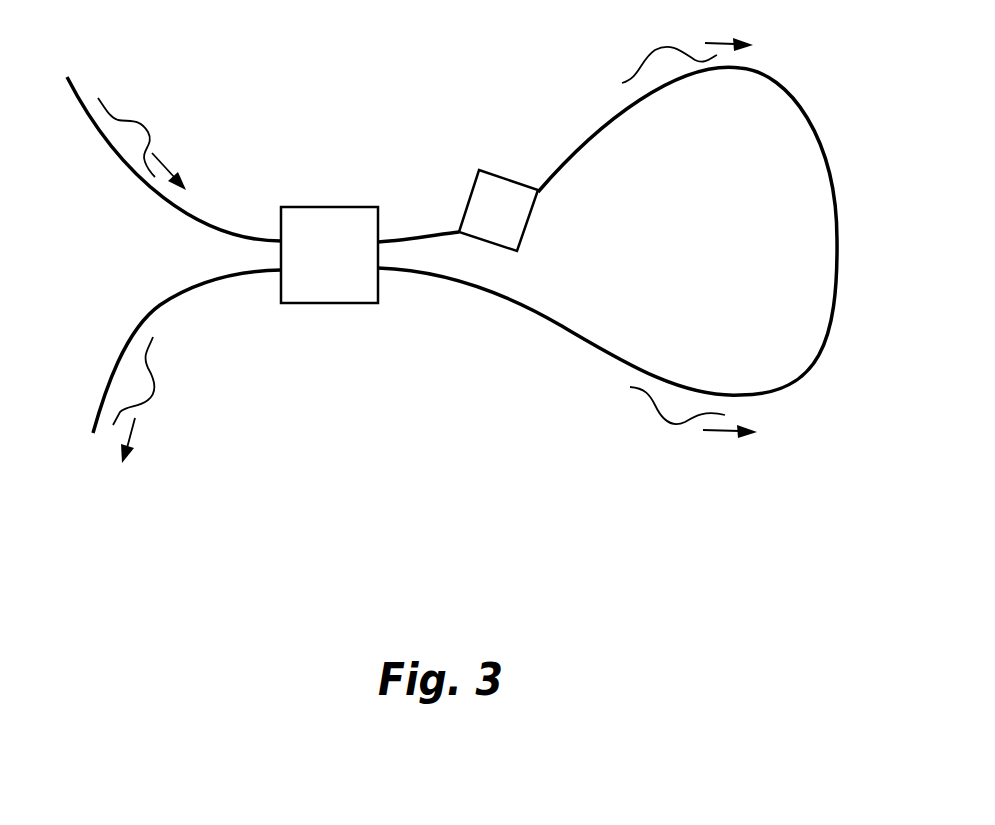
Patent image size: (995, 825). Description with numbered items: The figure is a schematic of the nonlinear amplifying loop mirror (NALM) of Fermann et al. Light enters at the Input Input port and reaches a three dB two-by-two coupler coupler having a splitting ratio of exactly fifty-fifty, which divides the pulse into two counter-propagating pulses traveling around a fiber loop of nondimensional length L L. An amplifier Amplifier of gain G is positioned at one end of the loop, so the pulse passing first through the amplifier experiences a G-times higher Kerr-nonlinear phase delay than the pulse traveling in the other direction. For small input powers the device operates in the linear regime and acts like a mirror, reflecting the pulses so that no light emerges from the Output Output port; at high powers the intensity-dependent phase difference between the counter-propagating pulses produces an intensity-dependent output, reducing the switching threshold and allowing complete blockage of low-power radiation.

The input port Input is at (158, 140).
The output port Output is at (166, 386).
The 2x2 coupler is at (338, 320).
The amplifier Amplifier is at (466, 158).
The loop length L is at (607, 238).